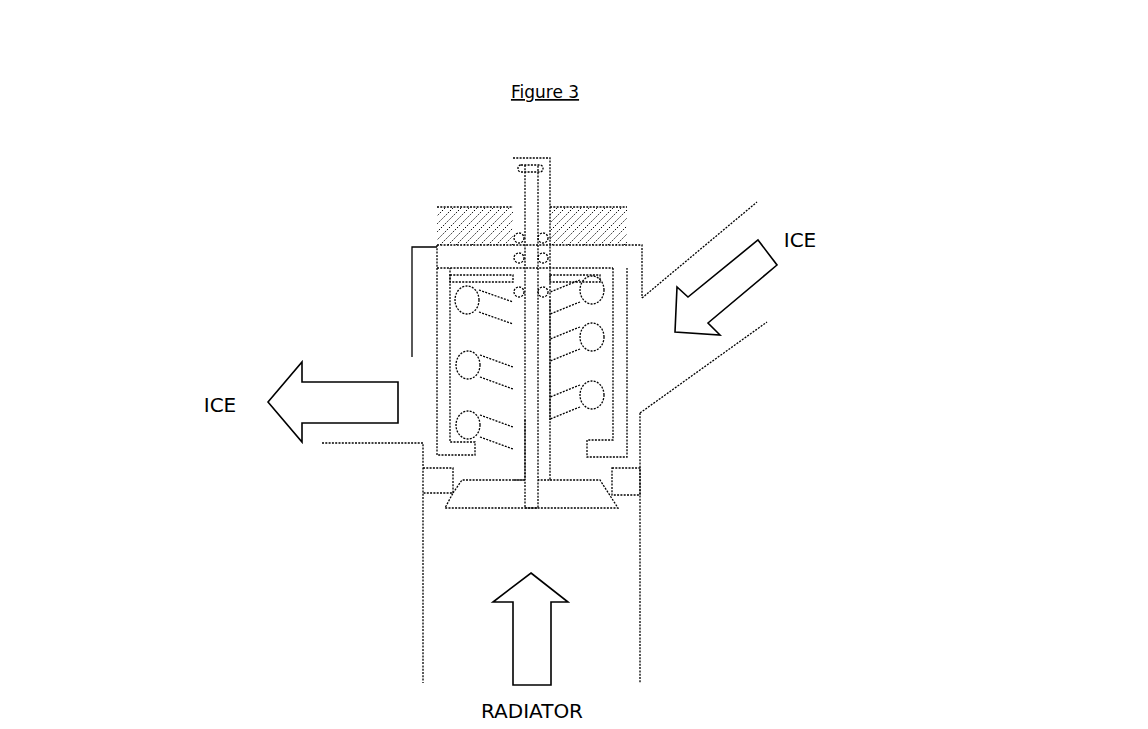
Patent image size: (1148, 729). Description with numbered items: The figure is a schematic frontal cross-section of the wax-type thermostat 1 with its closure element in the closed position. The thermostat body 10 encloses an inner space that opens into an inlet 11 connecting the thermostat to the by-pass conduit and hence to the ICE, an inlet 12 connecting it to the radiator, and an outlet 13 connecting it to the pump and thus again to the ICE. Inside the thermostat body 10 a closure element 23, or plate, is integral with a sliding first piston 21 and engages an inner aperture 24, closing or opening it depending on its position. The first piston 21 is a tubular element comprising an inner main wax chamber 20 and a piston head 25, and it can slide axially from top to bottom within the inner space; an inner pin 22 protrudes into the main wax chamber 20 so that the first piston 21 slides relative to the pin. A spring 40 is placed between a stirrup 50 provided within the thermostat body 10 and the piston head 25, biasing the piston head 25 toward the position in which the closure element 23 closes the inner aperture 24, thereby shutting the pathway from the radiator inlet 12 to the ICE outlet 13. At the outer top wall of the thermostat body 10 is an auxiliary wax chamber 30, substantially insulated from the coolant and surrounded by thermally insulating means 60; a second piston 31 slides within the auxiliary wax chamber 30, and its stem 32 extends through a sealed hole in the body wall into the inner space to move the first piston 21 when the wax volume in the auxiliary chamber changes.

The wax-type thermostat 1 is at (283, 198).
The thermostat body 10 is at (404, 300).
The inlet 11 is at (692, 354).
The inlet 12 is at (445, 573).
The outlet 13 is at (340, 430).
The main wax chamber 20 is at (530, 502).
The first piston 21 is at (560, 353).
The inner pin 22 is at (535, 433).
The closure element 23 is at (477, 500).
The inner aperture 24 is at (586, 468).
The piston head 25 is at (492, 278).
The auxiliary wax chamber 30 is at (518, 202).
The second piston 31 is at (532, 165).
The stem 32 is at (533, 227).
The spring 40 is at (467, 357).
The stirrup 50 is at (437, 402).
The thermally insulating means 60 is at (613, 227).